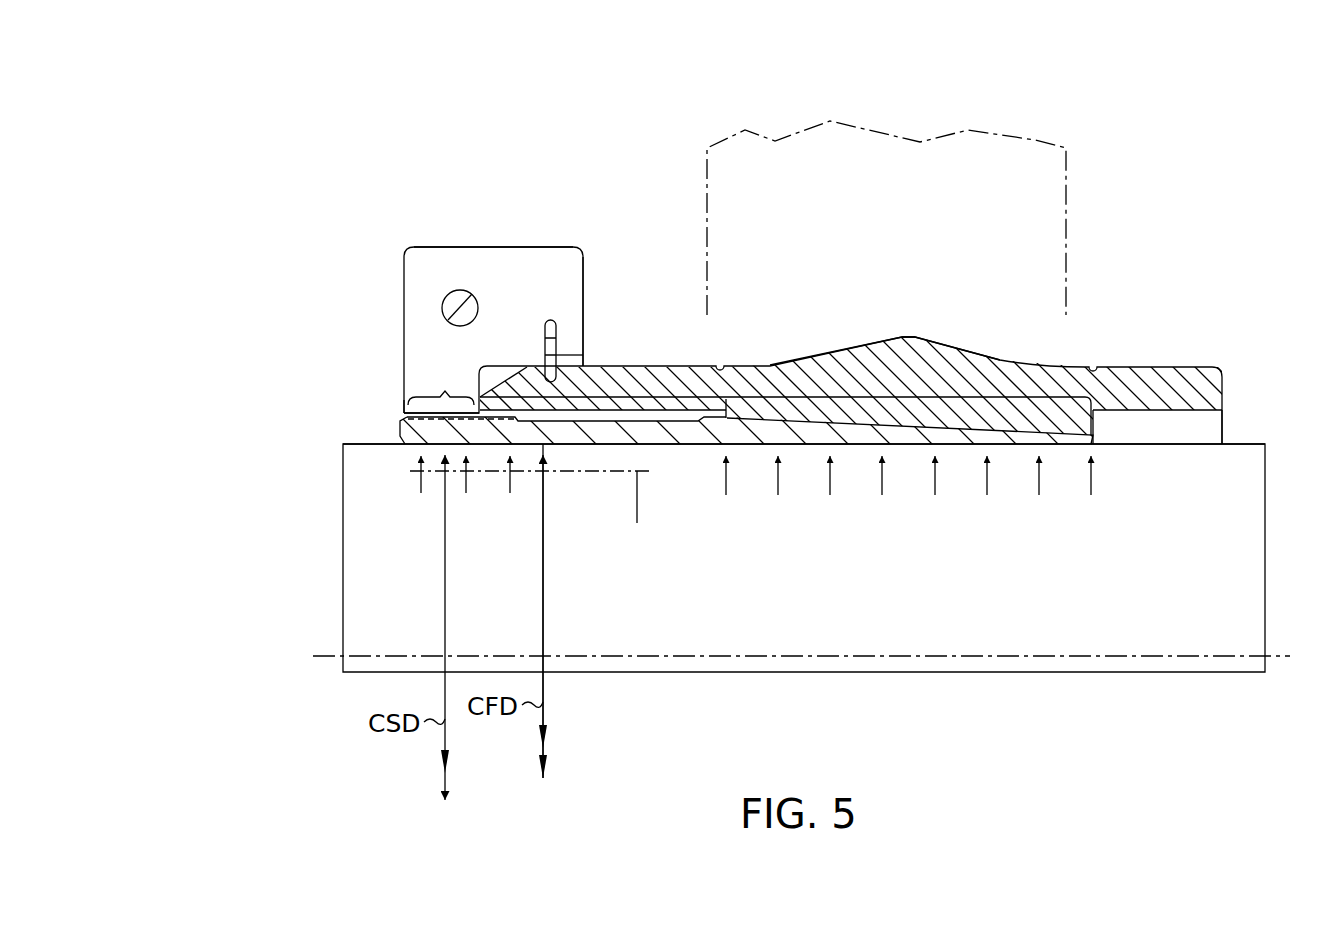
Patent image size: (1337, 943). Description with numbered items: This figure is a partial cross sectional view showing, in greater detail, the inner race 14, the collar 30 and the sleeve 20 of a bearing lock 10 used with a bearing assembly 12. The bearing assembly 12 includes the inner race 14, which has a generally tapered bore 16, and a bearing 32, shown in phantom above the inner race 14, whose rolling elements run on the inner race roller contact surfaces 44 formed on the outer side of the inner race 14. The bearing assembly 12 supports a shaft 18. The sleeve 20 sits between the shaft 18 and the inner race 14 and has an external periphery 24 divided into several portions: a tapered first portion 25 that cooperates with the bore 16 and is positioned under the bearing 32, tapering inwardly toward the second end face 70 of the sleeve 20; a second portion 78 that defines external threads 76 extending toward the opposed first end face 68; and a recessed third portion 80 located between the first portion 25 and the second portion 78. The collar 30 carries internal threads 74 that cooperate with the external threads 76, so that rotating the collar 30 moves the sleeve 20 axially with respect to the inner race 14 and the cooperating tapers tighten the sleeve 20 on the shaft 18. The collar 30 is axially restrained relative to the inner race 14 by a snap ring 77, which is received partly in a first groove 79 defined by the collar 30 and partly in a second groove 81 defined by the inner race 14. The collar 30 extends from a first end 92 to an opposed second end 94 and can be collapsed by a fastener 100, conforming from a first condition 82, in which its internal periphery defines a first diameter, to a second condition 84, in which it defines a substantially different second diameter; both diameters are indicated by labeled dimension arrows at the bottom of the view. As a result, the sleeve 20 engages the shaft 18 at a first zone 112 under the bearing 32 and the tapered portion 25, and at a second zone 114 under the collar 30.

The bearing lock 10 is at (405, 157).
The bearing assembly 12 is at (280, 100).
The inner race 14 is at (1222, 388).
The bore 16 is at (587, 450).
The shaft 18 is at (343, 505).
The sleeve 20 is at (404, 413).
The external periphery 24 is at (800, 406).
The first portion 25 is at (913, 399).
The collar 30 is at (583, 247).
The bearing 32 is at (1066, 168).
The inner race roller contact surfaces 44 is at (885, 343).
The first end face 68 is at (402, 430).
The second end face 70 is at (1093, 437).
The internal threads 74 is at (423, 410).
The external threads 76 is at (425, 414).
The snap ring 77 is at (547, 340).
The second portion 78 is at (441, 385).
The first groove 79 is at (557, 328).
The third portion 80 is at (633, 396).
The second groove 81 is at (570, 376).
The first condition 82 is at (670, 447).
The second condition 84 is at (637, 523).
The first end 92 is at (404, 268).
The second end 94 is at (583, 264).
The fastener 100 is at (459, 290).
The first zone 112 is at (908, 510).
The second zone 114 is at (505, 510).